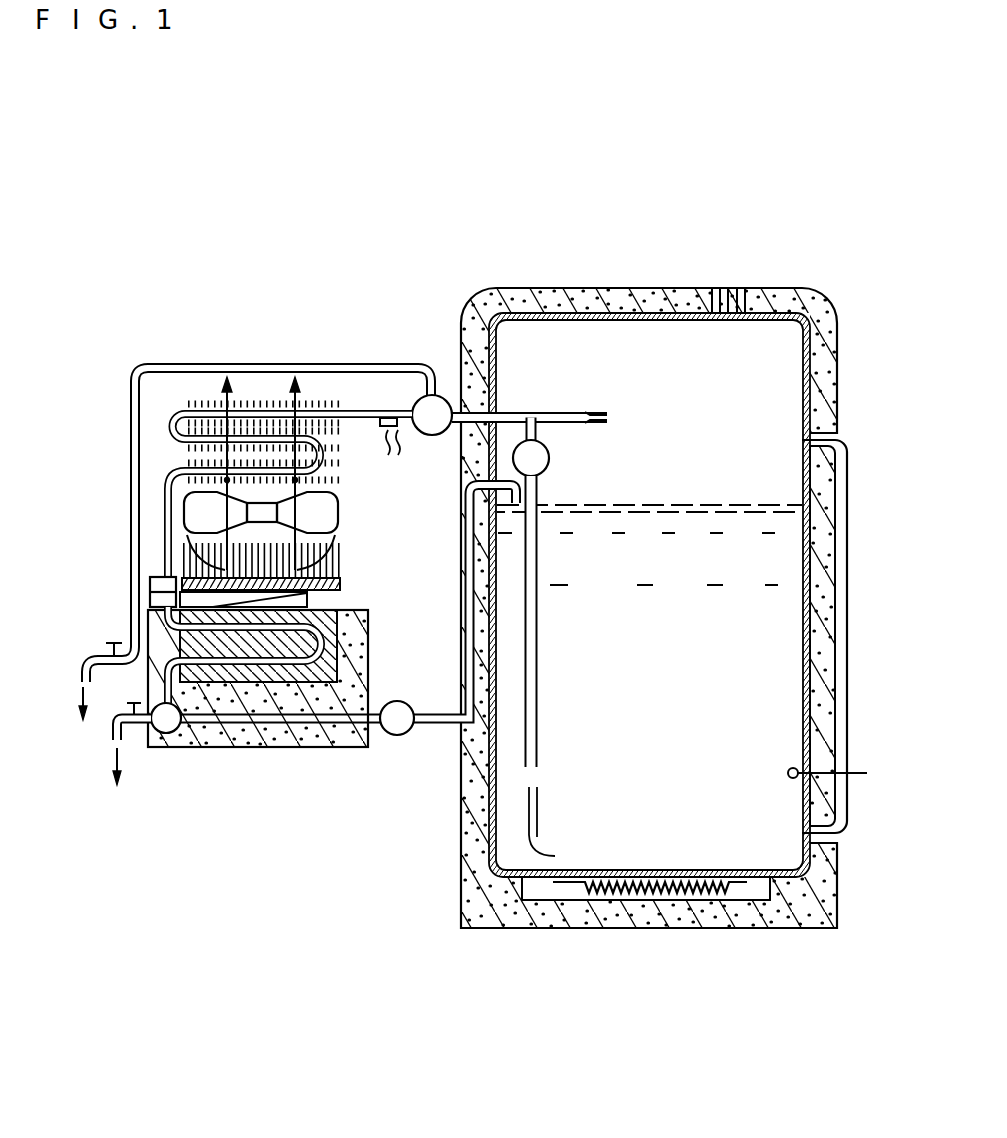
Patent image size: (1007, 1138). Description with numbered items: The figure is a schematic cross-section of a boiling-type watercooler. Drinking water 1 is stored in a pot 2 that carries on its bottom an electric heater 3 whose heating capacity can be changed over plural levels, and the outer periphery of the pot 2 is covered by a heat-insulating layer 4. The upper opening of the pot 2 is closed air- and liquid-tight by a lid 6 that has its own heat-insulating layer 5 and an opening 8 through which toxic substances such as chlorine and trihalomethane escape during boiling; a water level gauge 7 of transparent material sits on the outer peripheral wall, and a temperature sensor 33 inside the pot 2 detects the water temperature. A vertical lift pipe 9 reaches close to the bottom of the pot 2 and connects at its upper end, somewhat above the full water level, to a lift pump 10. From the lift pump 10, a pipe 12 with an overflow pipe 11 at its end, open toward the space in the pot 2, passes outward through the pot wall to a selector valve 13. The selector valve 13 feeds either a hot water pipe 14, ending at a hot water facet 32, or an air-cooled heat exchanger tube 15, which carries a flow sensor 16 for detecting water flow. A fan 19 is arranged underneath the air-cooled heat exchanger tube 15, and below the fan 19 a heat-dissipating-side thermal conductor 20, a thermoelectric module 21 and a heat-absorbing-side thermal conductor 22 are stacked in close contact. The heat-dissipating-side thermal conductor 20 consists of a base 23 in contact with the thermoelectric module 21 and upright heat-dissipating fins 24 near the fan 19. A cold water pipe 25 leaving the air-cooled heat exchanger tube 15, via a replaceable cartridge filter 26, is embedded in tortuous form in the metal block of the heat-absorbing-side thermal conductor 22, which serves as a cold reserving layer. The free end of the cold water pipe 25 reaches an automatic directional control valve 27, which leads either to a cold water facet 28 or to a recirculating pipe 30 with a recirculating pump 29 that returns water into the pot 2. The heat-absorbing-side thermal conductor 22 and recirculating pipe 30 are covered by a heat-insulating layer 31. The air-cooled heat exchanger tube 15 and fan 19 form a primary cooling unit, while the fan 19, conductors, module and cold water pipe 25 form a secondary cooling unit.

The drinking water 1 is at (660, 719).
The pot 2 is at (807, 692).
The electric heater 3 is at (730, 895).
The heat-insulating layer 4 is at (825, 745).
The heat-insulating layer 5 is at (588, 300).
The lid 6 is at (654, 325).
The water level gauge 7 is at (847, 610).
The opening 8 is at (730, 293).
The lift pipe 9 is at (533, 767).
The lift pump 10 is at (514, 456).
The overflow pipe 11 is at (583, 411).
The pipe 12 is at (513, 412).
The selector valve 13 is at (440, 408).
The hot water pipe 14 is at (130, 427).
The air-cooled heat exchanger tube 15 is at (253, 410).
The flow sensor 16 is at (398, 451).
The fan 19 is at (333, 516).
The heat-dissipating-side thermal conductor 20 is at (316, 574).
The thermoelectric module 21 is at (172, 590).
The heat-absorbing-side thermal conductor 22 is at (330, 660).
The base 23 is at (341, 586).
The heat-dissipating fins 24 is at (335, 558).
The cold water pipe 25 is at (280, 665).
The filter 26 is at (153, 577).
The automatic directional control valve 27 is at (166, 735).
The cold water facet 28 is at (118, 723).
The recirculating pump 29 is at (398, 737).
The recirculating pipe 30 is at (325, 724).
The heat-insulating layer 31 is at (213, 744).
The hot water facet 32 is at (92, 658).
The temperature sensor 33 is at (790, 779).